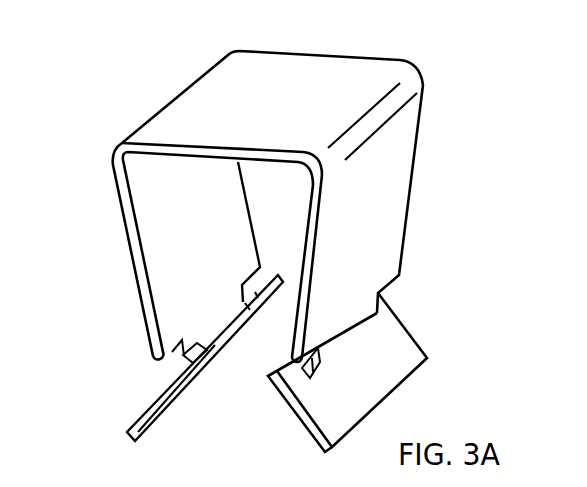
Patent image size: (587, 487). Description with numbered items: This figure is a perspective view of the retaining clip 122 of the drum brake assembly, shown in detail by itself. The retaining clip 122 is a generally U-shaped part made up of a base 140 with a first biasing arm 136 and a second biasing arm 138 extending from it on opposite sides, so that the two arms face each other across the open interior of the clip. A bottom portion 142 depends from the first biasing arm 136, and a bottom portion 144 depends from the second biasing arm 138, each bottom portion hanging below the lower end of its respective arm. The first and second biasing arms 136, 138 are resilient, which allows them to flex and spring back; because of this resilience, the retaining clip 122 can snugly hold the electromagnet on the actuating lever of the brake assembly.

The retaining clip 122 is at (462, 44).
The first biasing arm 136 is at (387, 200).
The second biasing arm 138 is at (121, 210).
The base 140 is at (323, 68).
The bottom portion 142 is at (405, 346).
The bottom portion 144 is at (143, 405).